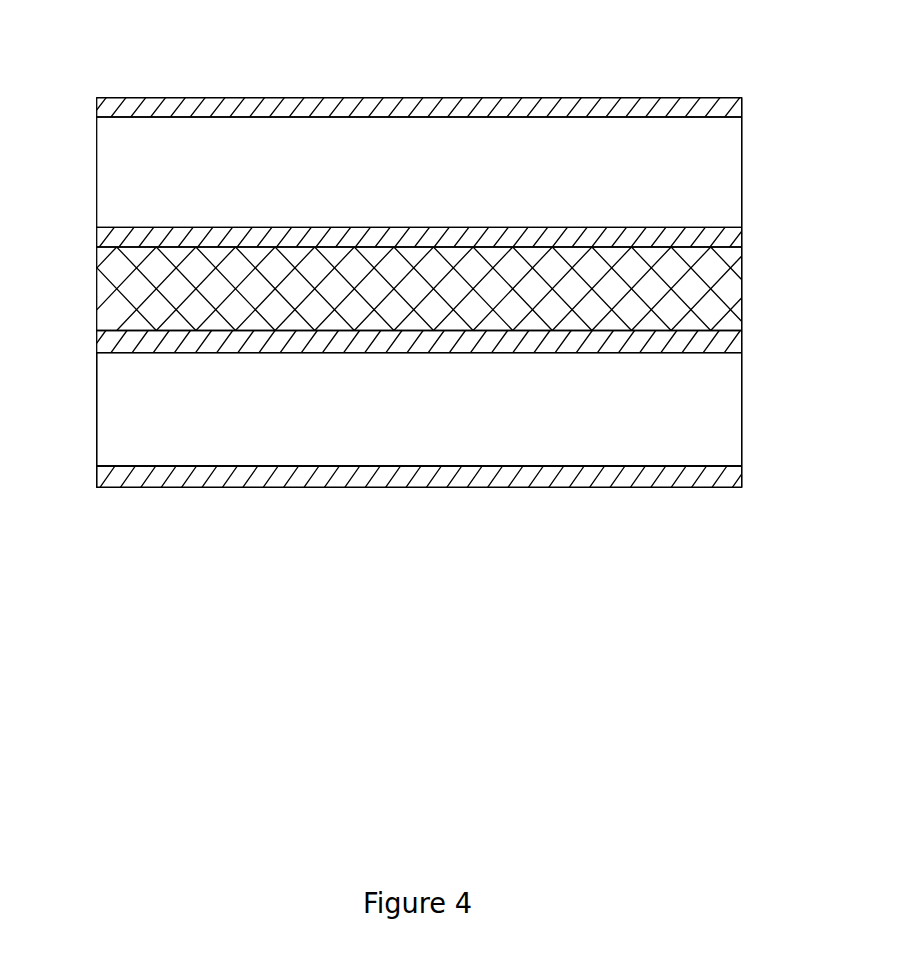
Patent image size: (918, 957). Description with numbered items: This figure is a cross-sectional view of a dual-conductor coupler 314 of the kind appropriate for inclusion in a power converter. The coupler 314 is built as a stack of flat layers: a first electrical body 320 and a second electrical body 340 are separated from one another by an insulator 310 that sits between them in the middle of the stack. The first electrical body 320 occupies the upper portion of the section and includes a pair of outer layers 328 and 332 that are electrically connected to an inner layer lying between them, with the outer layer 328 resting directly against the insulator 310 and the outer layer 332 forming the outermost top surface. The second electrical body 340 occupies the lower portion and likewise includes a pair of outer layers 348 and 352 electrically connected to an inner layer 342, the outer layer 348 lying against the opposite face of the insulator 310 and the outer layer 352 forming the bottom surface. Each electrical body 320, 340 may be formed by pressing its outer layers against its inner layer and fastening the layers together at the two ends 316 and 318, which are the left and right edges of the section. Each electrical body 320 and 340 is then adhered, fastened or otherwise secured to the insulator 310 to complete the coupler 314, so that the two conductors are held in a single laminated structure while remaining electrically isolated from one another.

The dual-conductor coupler 314 is at (108, 70).
The insulator 310 is at (724, 289).
The end 316 is at (97, 454).
The end 318 is at (742, 443).
The first electrical body 320 is at (125, 183).
The outer layer 328 is at (724, 238).
The outer layer 332 is at (722, 106).
The second electrical body 340 is at (118, 413).
The inner layer 342 is at (719, 419).
The outer layer 348 is at (722, 342).
The outer layer 352 is at (724, 477).